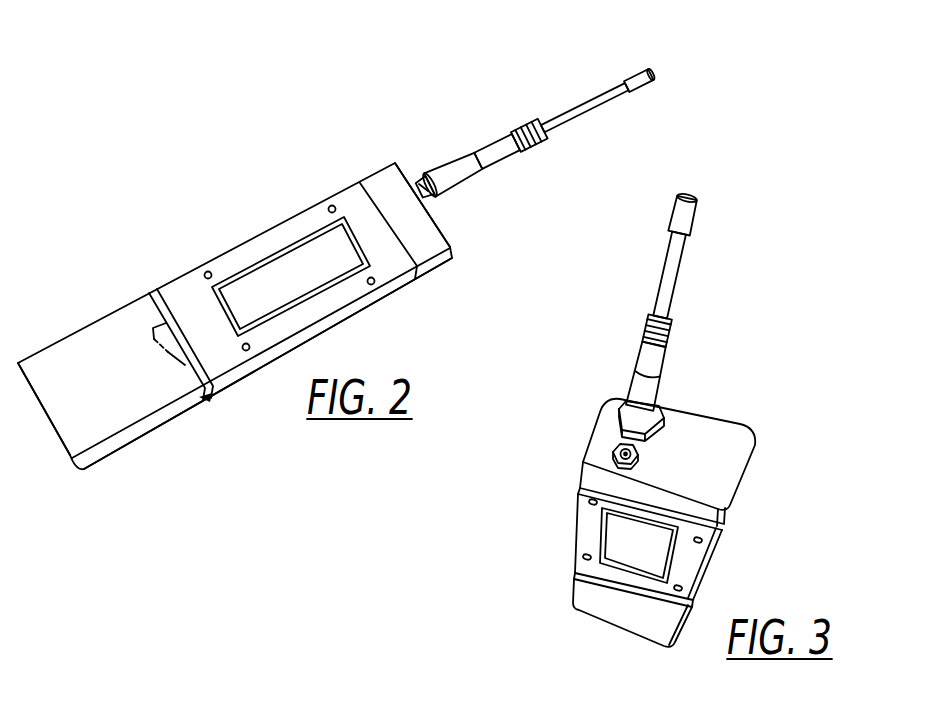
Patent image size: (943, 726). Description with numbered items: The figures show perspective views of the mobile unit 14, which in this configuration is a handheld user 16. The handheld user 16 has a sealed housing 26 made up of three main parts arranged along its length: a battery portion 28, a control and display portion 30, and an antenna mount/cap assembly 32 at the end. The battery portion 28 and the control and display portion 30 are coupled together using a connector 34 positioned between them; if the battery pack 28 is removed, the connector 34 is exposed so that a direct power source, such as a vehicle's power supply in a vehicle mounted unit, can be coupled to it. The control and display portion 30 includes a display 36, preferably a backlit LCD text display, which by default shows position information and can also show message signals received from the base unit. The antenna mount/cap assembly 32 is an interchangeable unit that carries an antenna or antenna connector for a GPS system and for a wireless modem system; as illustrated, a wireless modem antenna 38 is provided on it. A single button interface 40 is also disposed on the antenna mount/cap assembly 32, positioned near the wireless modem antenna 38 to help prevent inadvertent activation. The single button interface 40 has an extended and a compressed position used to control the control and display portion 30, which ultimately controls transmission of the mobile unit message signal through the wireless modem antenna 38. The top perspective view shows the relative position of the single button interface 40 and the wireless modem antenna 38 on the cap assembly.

In FIG. 2, the mobile unit 14 is at (289, 124).
In FIG. 3, the mobile unit 14 is at (505, 540).
In FIG. 2, the handheld user 16 is at (230, 383).
In FIG. 3, the handheld user 16 is at (573, 582).
In FIG. 2, the sealed housing 26 is at (262, 384).
In FIG. 2, the battery portion 28 is at (118, 398).
In FIG. 3, the battery portion 28 is at (580, 600).
In FIG. 2, the control and display portion 30 is at (200, 313).
In FIG. 3, the control and display portion 30 is at (590, 520).
In FIG. 2, the antenna mount/cap assembly 32 is at (378, 175).
In FIG. 3, the antenna mount/cap assembly 32 is at (577, 473).
In FIG. 2, the connector 34 is at (168, 367).
In FIG. 2, the display 36 is at (242, 277).
In FIG. 2, the wireless modem antenna 38 is at (520, 130).
In FIG. 3, the wireless modem antenna 38 is at (642, 373).
In FIG. 2, the single button interface 40 is at (421, 178).
In FIG. 3, the single button interface 40 is at (613, 450).